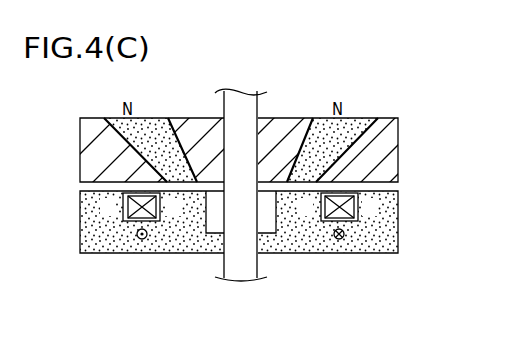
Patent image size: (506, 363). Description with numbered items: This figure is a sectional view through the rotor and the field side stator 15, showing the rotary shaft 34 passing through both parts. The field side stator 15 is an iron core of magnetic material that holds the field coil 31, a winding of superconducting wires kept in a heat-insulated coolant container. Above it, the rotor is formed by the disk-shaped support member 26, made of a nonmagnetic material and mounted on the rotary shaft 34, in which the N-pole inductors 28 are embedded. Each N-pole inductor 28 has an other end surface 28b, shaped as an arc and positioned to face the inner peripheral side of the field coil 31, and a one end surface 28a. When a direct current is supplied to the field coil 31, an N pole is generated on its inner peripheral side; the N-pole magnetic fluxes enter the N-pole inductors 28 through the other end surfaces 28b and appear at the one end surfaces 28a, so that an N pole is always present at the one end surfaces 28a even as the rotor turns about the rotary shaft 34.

The field side stator 15 is at (401, 243).
The support member 26 is at (398, 164).
The N-pole inductor 28 is at (147, 142).
The one end surface 28a is at (140, 118).
The other end surface 28b is at (186, 138).
The field coil 31 is at (146, 220).
The shaft 34 is at (243, 266).